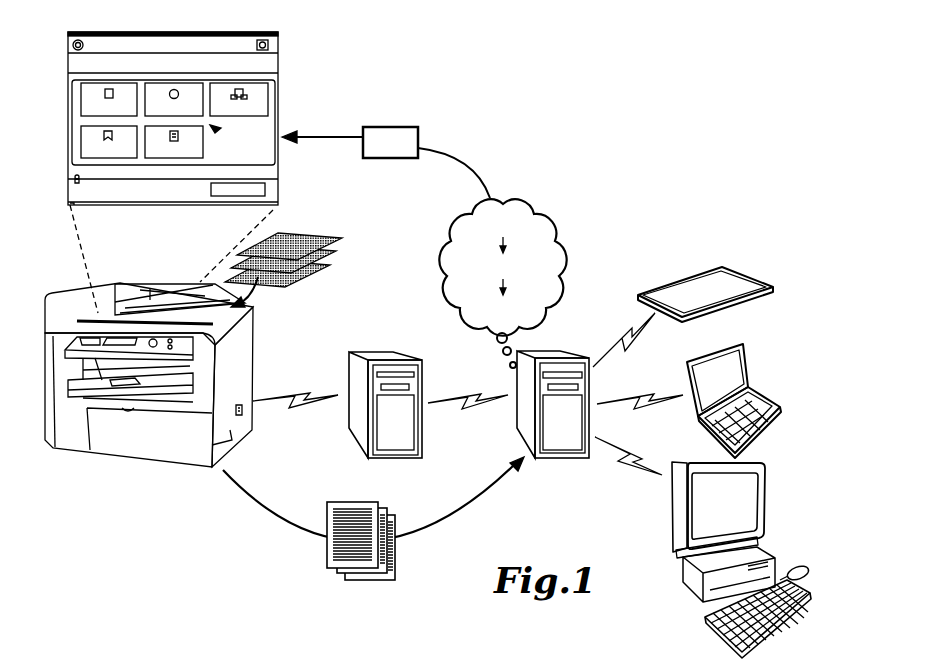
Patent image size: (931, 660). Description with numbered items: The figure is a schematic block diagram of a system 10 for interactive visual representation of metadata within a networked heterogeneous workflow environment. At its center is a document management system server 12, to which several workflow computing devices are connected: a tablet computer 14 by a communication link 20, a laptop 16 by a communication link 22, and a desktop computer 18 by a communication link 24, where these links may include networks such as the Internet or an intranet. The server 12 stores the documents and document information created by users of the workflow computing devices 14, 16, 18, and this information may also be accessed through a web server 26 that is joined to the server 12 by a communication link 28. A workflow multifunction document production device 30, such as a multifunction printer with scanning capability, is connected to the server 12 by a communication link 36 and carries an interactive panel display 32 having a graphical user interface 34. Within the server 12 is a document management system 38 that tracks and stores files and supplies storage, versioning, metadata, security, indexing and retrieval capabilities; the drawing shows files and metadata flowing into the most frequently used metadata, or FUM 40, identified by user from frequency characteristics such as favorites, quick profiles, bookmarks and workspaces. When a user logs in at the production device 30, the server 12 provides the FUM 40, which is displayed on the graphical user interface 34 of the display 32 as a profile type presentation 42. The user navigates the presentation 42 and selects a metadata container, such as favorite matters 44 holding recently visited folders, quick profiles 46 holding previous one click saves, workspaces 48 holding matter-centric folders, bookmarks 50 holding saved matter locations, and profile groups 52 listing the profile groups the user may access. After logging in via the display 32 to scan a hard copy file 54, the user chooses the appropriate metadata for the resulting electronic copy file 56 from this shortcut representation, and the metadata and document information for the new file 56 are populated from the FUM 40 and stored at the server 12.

The system for interactive visual representation of metadata 10 is at (473, 98).
The document management system (DMS) server 12 is at (556, 460).
The tablet computer 14 is at (703, 280).
The laptop 16 is at (738, 375).
The desktop computer 18 is at (752, 507).
The communication link 20 is at (622, 336).
The communication link 22 is at (652, 405).
The communication link 24 is at (632, 472).
The web server 26 is at (378, 351).
The communication link 28 is at (460, 397).
The workflow multifunction document production device 30 is at (149, 380).
The interactive panel display 32 is at (127, 337).
The graphical user interface 34 is at (181, 172).
The communication link 36 is at (293, 397).
The document management system 38 is at (520, 198).
The most frequently used metadata (FUM) 40 is at (392, 127).
The profile type presentation 42 is at (217, 130).
The favorite matters container 44 is at (90, 100).
The quick profiles container 46 is at (190, 95).
The workspaces container 48 is at (263, 99).
The bookmarks container 50 is at (90, 138).
The profile groups container 52 is at (197, 147).
The hard copy file 54 is at (312, 235).
The electronic copy file 56 is at (367, 581).